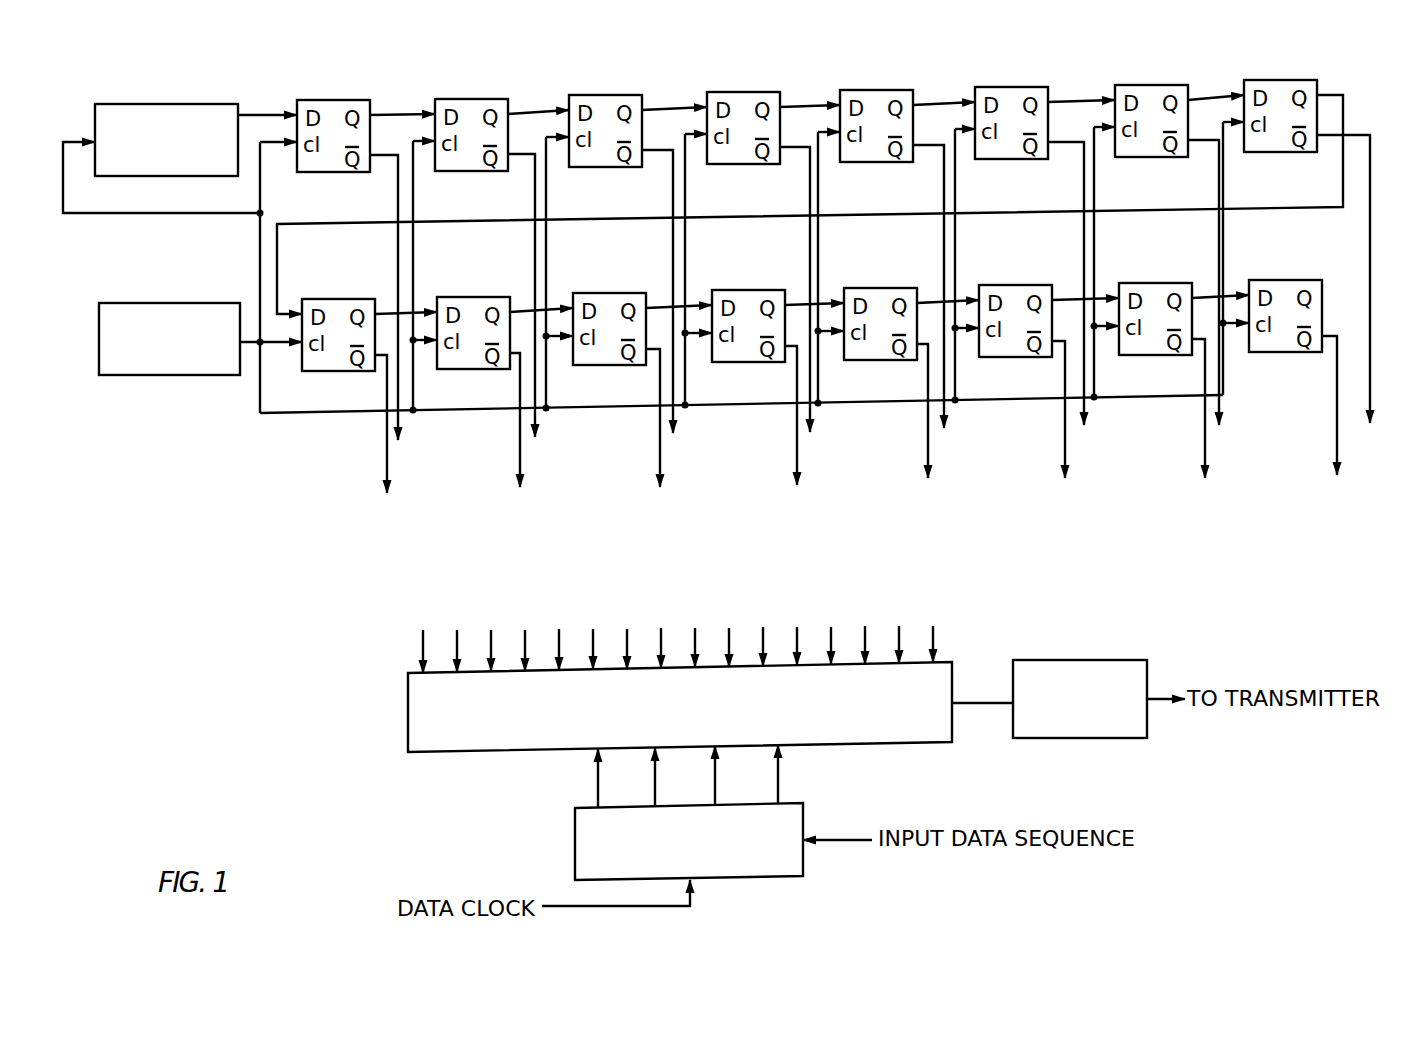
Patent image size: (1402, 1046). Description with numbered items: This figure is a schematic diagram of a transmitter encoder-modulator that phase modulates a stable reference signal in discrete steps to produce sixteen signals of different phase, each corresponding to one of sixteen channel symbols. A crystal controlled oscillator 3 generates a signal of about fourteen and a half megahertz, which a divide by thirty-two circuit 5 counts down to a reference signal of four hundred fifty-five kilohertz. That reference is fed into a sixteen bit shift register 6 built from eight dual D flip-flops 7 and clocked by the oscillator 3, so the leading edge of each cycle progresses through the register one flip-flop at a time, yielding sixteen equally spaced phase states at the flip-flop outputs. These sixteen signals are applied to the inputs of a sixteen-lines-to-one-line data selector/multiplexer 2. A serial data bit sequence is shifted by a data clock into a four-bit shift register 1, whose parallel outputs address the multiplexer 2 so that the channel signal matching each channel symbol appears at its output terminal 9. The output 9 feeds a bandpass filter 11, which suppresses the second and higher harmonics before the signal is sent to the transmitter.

The four-bit shift register 1 is at (575, 830).
The data selector/multiplexer 2 is at (408, 705).
The crystal controlled oscillator 3 is at (175, 303).
The divide by 32 circuit 5 is at (183, 104).
The 16 bit shift register 6 is at (771, 60).
The dual D flip-flop 7 is at (333, 100).
The data selector/multiplexer output terminal 9 is at (975, 703).
The bandpass filter 11 is at (1060, 660).